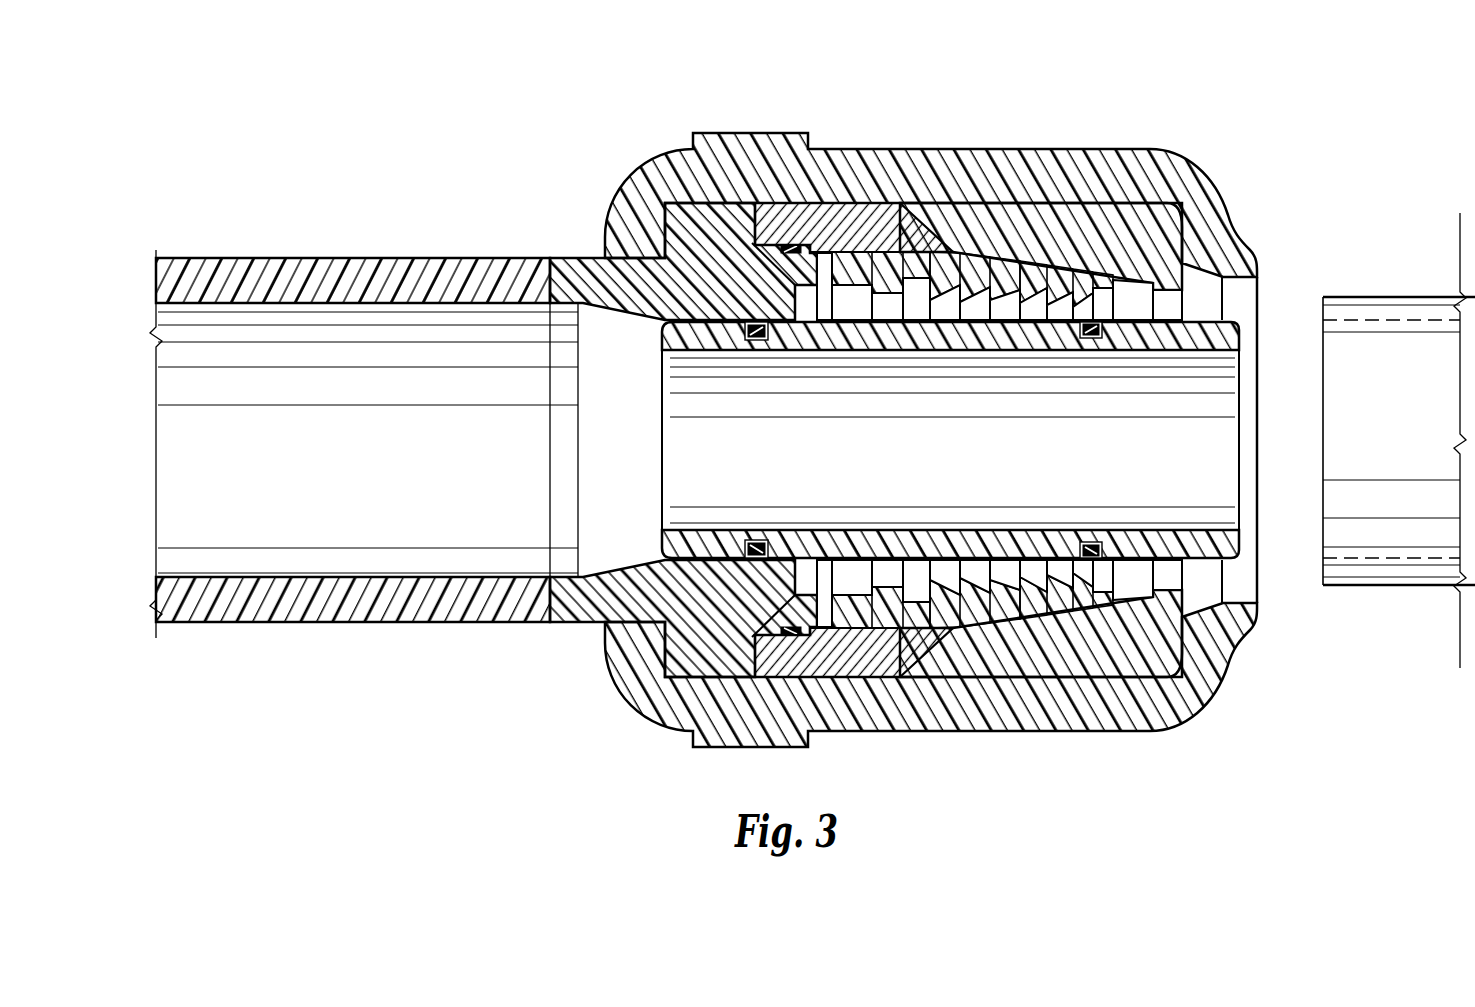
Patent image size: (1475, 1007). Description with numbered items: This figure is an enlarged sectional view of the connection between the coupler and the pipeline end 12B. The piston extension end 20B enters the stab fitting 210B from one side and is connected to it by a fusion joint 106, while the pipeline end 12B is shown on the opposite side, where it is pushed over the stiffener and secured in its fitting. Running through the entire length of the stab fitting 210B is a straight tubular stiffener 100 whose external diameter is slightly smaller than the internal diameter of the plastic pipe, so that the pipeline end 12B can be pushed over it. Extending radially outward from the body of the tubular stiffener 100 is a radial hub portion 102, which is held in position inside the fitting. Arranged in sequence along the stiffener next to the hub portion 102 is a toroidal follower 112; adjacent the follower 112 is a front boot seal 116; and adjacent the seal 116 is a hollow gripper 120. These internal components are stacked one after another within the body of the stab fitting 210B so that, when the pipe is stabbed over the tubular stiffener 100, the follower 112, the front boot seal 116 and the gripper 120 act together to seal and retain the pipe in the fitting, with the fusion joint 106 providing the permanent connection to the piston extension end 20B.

The stab fitting 210B is at (1169, 137).
The piston extension end 20B is at (402, 258).
The pipeline end 12B is at (1398, 348).
The tubular stiffener 100 is at (912, 348).
The radial hub portion 102 is at (710, 242).
The fusion joint 106 is at (562, 258).
The toroidal follower 112 is at (893, 603).
The front boot seal 116 is at (983, 608).
The hollow gripper 120 is at (1058, 602).